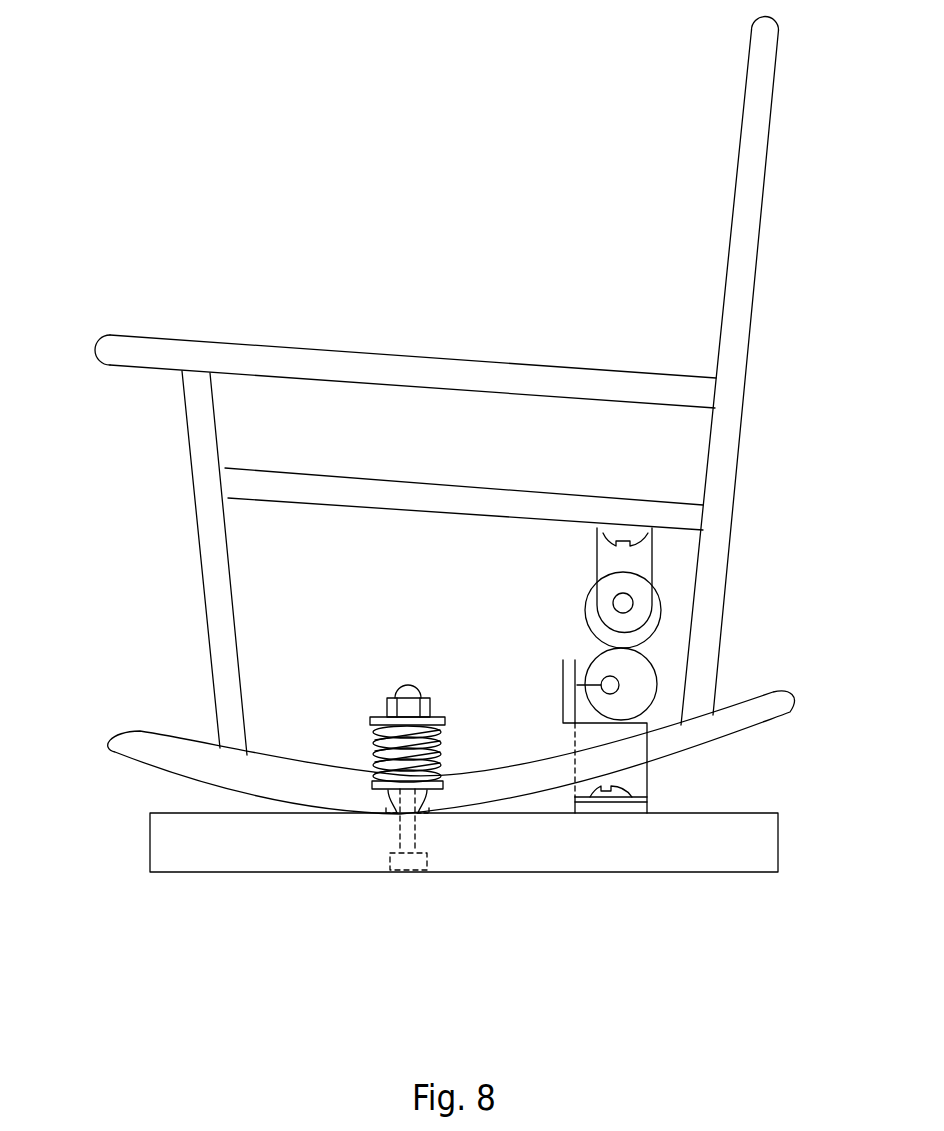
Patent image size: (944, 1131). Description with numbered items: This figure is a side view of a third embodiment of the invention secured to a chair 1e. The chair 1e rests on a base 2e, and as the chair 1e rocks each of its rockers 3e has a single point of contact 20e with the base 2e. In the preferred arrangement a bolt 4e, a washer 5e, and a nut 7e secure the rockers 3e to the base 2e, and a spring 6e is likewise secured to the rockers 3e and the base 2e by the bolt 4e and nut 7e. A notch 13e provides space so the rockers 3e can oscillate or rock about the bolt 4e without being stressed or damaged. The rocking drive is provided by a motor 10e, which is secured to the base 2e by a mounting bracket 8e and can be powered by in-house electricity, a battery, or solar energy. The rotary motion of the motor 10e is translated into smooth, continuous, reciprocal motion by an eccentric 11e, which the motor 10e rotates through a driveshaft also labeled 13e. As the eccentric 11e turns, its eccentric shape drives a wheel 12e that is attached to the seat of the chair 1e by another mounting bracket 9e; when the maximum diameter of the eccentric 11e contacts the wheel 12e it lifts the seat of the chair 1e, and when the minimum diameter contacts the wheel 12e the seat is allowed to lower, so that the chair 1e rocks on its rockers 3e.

The chair 1e is at (798, 163).
The base 2e is at (583, 855).
The rockers 3e is at (130, 748).
The bolt 4e is at (411, 866).
The washer 5e is at (419, 812).
The spring 6e is at (452, 789).
The nut 7e is at (407, 681).
The mounting bracket 8e is at (642, 782).
The mounting bracket 9e is at (607, 561).
The motor 10e is at (577, 705).
The eccentric 11e is at (640, 677).
The wheel 12e is at (588, 608).
The notch 13e is at (560, 683).
The single point of contact 20e is at (400, 822).